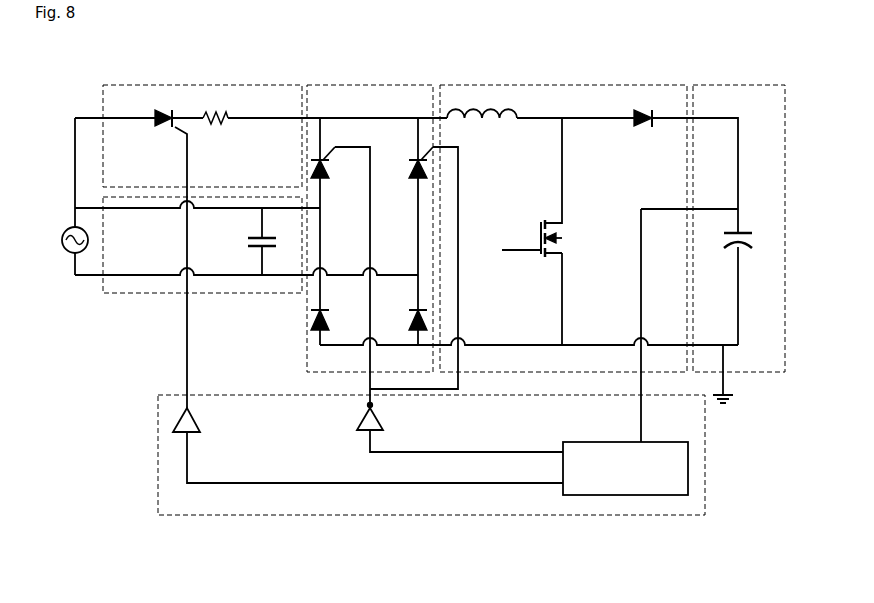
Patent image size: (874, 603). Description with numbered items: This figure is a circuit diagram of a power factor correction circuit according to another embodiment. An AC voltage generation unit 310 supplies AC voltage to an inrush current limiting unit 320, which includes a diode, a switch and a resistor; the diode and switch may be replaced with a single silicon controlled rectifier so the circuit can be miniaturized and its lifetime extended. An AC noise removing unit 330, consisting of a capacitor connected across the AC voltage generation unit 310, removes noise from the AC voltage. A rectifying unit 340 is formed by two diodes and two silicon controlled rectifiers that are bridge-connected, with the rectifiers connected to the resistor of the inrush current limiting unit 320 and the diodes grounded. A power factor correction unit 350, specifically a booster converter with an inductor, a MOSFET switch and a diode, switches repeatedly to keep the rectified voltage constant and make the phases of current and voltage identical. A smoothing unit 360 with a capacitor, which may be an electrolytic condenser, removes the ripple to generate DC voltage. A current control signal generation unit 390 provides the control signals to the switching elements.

The AC voltage generation unit 310 is at (62, 228).
The inrush current limiting unit 320 is at (206, 85).
The AC noise removing unit 330 is at (243, 295).
The rectifying unit 340 is at (371, 85).
The power factor correction unit 350 is at (563, 85).
The smoothing unit 360 is at (738, 85).
The current control signal generation unit 390 is at (425, 517).